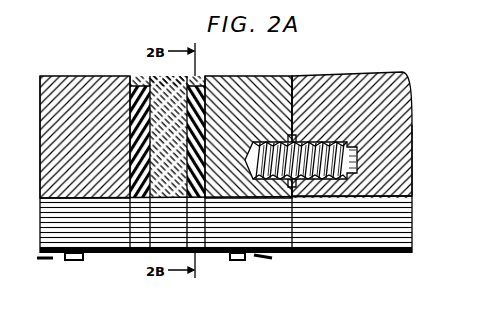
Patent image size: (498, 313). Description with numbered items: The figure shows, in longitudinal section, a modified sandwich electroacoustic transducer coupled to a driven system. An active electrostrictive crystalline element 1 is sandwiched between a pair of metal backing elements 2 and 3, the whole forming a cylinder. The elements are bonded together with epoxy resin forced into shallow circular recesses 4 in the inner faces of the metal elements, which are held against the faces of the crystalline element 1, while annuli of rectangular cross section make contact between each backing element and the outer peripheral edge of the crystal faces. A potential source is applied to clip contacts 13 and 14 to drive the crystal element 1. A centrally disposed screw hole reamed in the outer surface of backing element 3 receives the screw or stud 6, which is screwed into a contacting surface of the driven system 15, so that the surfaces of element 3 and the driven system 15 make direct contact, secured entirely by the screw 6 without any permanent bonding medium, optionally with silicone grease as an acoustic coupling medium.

The electrostrictive crystalline element 1 is at (165, 78).
The metal backing element 2 is at (62, 85).
The metal backing element 3 is at (263, 80).
The shallow circular recess 4 is at (139, 88).
The screw or stud 6 is at (360, 158).
The clip contact 13 is at (52, 259).
The clip contact 14 is at (272, 257).
The driven system 15 is at (395, 104).